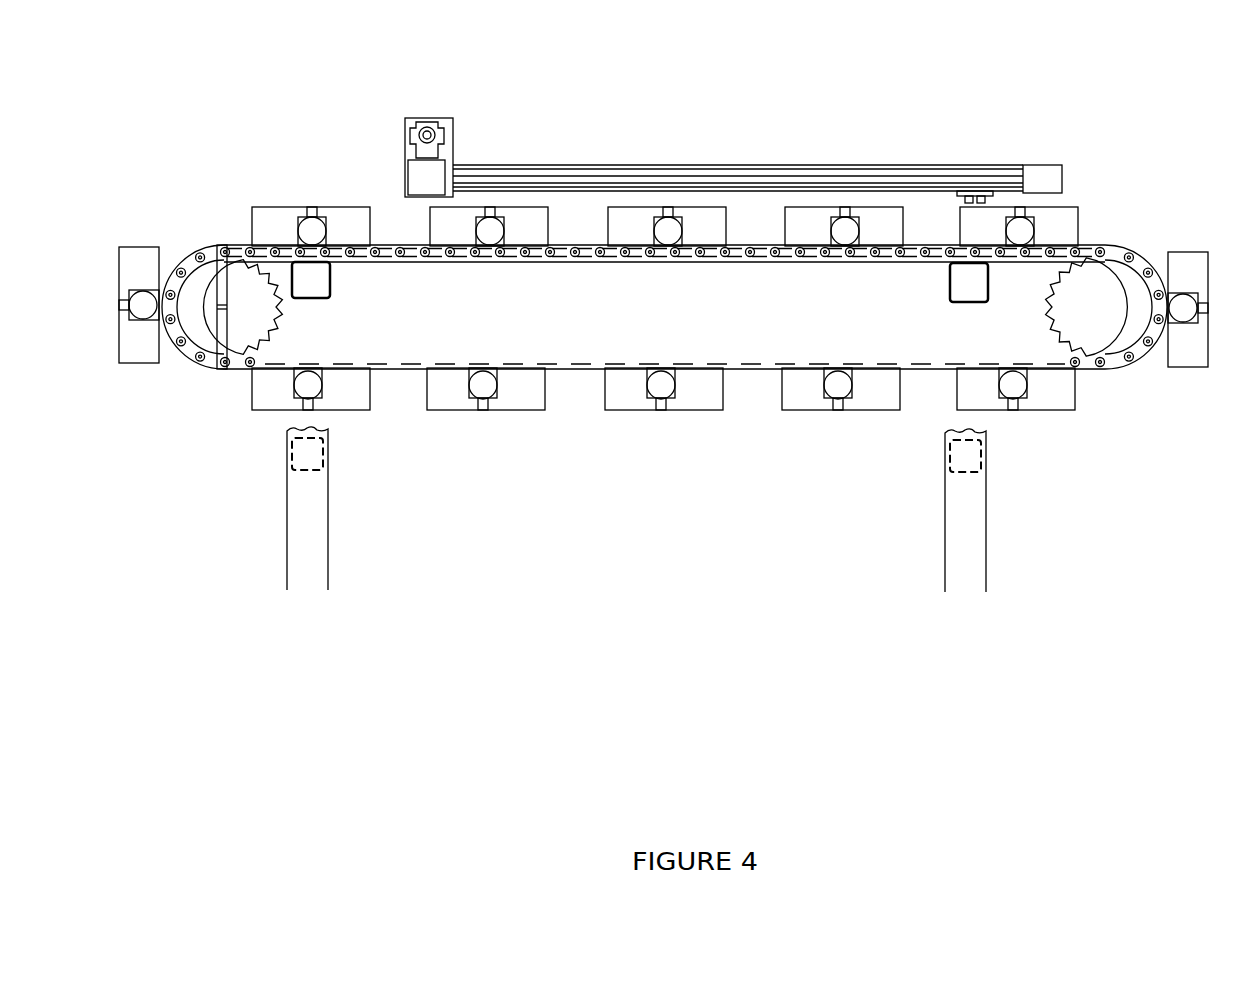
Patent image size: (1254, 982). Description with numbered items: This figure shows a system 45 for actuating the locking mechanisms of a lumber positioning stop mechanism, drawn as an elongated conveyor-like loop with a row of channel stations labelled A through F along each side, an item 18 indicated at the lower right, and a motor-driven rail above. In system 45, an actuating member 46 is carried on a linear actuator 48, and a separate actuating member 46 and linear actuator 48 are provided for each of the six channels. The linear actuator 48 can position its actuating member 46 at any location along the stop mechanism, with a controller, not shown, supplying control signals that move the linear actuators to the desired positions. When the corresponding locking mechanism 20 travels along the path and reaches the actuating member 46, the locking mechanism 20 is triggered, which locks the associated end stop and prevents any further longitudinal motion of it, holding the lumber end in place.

The conveyor 18 is at (1030, 418).
The locking mechanism 20 is at (489, 385).
The system 45 is at (340, 64).
The actuating member 46 is at (988, 196).
The linear actuator 48 is at (707, 165).